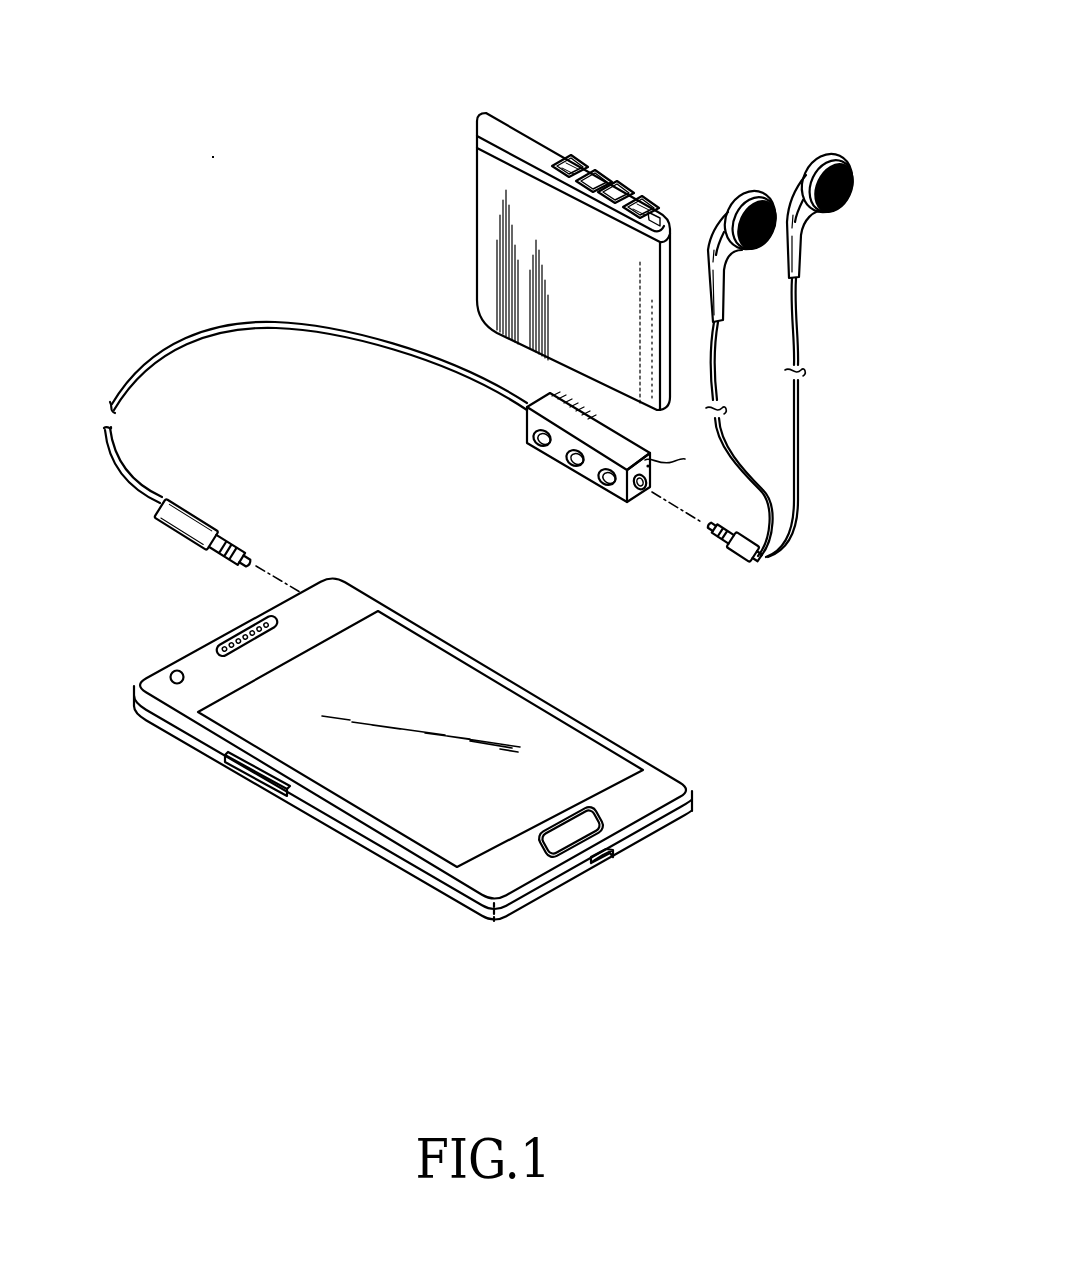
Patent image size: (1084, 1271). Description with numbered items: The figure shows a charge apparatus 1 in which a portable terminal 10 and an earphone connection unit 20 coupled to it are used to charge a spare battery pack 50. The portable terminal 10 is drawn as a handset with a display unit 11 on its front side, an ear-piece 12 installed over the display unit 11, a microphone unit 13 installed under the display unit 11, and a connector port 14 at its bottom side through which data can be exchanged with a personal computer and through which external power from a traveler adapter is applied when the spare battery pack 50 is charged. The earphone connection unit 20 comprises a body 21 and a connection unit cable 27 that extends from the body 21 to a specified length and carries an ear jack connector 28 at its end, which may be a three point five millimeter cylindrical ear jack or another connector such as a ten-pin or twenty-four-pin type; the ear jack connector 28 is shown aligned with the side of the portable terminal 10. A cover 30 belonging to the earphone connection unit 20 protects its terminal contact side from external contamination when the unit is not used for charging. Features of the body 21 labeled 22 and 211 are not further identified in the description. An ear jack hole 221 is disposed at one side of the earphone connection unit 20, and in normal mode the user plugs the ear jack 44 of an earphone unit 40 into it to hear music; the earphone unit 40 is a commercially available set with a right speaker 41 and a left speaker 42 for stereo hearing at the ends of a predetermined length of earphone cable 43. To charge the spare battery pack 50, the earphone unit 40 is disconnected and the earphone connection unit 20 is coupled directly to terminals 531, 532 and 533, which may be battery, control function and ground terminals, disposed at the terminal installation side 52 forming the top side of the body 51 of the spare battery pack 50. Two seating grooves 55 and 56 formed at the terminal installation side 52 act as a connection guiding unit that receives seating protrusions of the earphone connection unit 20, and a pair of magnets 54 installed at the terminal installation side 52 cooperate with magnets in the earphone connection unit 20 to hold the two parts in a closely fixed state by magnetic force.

The charge apparatus 1 is at (258, 244).
The portable terminal 10 is at (481, 652).
The display unit 11 is at (381, 625).
The ear-piece 12 is at (232, 636).
The microphone unit 13 is at (658, 821).
The connector port 14 is at (604, 866).
The earphone connection unit 20 is at (500, 451).
The body 21 is at (592, 473).
The control button 211 is at (567, 468).
The earphone jack 22 is at (637, 498).
The ear jack hole 221 is at (645, 492).
The connection unit cable 27 is at (350, 326).
The ear jack connector 28 is at (232, 541).
The cover 30 is at (631, 492).
The earphone unit 40 is at (828, 358).
The right speaker 41 is at (766, 196).
The left speaker 42 is at (839, 150).
The earphone cable 43 is at (800, 440).
The ear jack 44 is at (738, 560).
The spare battery pack 50 is at (634, 144).
The body 51 is at (488, 196).
The terminal installation side 52 is at (526, 135).
The terminal 531 is at (596, 172).
The terminal 532 is at (620, 188).
The terminal 533 is at (641, 198).
The magnets 54 is at (598, 158).
The seating groove 55 is at (663, 204).
The seating groove 56 is at (567, 155).